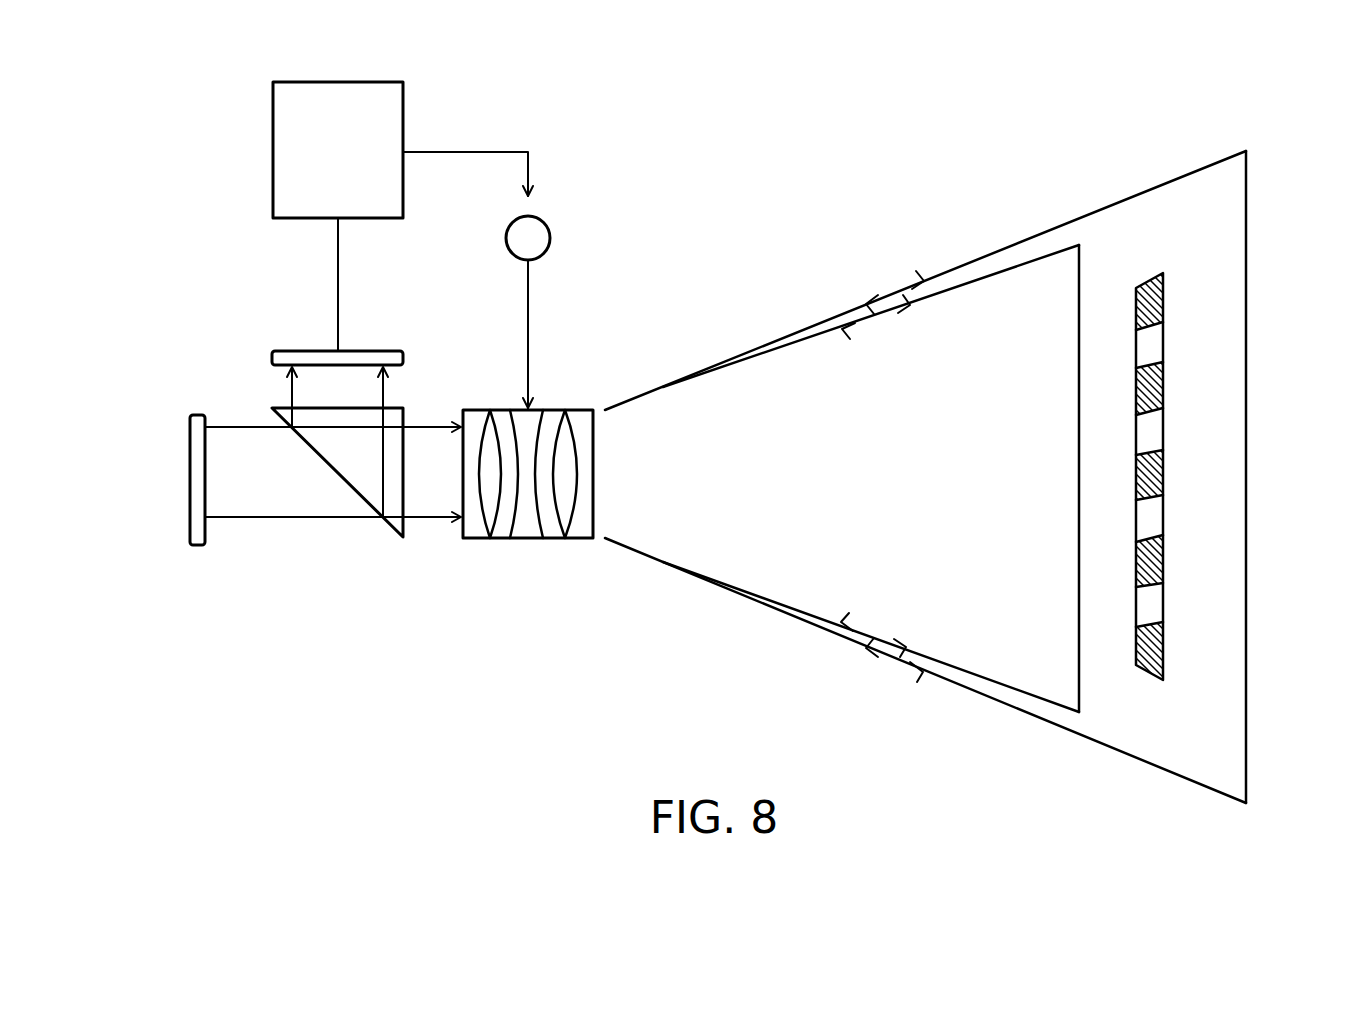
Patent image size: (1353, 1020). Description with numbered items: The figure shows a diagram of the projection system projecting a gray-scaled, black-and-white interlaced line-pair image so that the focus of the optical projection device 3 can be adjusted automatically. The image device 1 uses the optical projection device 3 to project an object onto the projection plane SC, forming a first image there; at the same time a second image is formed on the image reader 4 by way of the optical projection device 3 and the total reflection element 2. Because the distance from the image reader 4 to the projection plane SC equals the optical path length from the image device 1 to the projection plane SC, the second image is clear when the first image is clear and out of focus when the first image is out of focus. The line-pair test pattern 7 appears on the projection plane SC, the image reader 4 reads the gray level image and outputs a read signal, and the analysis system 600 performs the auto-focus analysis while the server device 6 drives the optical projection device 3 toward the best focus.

The analysis system 600 is at (273, 151).
The server device 6 is at (551, 238).
The image reader 4 is at (272, 358).
The image device 1 is at (190, 475).
The total reflection element 2 is at (403, 538).
The optical projection device 3 is at (560, 540).
The test pattern / gradation pattern 7 is at (1163, 298).
The projection plane SC is at (1246, 473).